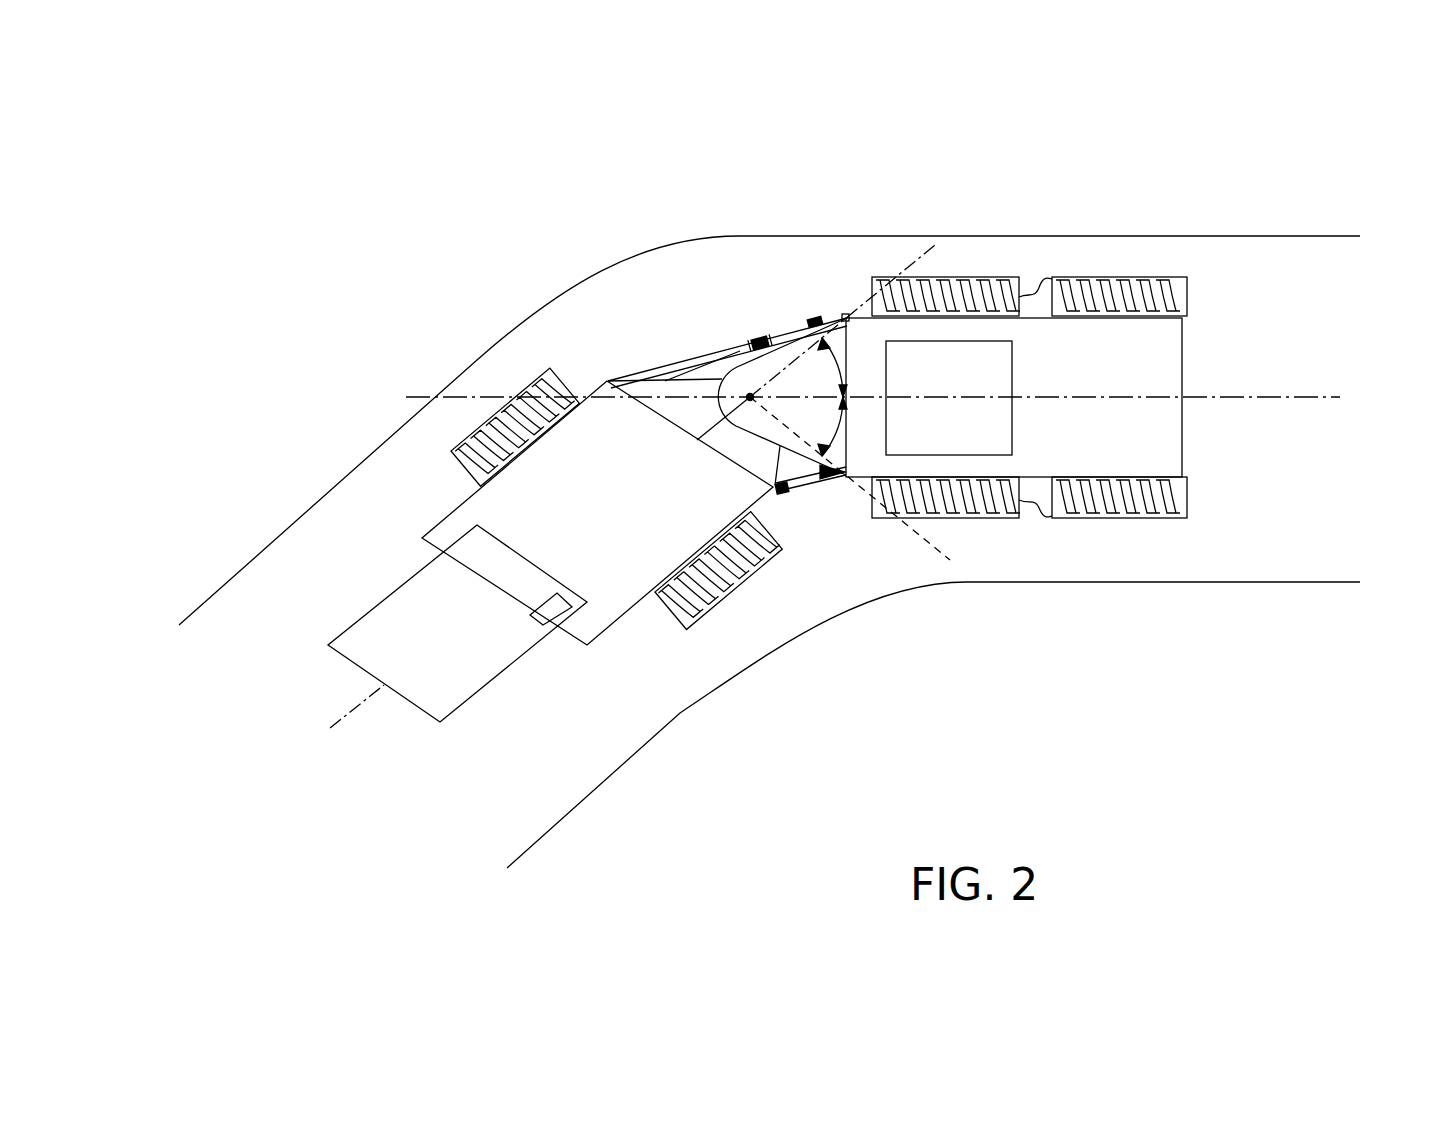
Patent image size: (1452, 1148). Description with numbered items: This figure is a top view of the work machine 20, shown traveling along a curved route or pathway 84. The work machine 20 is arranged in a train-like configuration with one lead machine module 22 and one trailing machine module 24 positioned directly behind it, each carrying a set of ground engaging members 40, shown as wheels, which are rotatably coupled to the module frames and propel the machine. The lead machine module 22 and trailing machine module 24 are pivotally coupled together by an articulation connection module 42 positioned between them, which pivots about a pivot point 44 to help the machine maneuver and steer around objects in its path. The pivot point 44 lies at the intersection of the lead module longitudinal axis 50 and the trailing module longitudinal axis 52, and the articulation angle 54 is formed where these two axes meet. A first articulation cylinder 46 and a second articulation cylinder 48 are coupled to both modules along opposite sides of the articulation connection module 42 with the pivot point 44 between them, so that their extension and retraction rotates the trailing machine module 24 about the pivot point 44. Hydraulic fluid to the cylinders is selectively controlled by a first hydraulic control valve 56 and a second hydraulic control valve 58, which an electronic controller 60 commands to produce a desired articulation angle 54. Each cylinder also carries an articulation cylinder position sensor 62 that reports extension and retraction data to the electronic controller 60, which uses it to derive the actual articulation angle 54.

The work machine 20 is at (401, 155).
The lead machine module 22 is at (385, 625).
The trailing machine module 24 is at (1145, 443).
The ground engaging members 40 is at (1142, 293).
The articulation connection module 42 is at (760, 268).
The pivot point 44 is at (750, 397).
The first articulation cylinder 46 is at (795, 329).
The second articulation cylinder 48 is at (805, 480).
The lead module longitudinal axis 50 is at (343, 718).
The trailing module longitudinal axis 52 is at (475, 397).
The articulation angle 54 is at (828, 350).
The first hydraulic control valve 56 is at (817, 322).
The second hydraulic control valve 58 is at (825, 478).
The electronic controller 60 is at (548, 616).
The articulation cylinder position sensor 62 is at (760, 341).
The pathway 84 is at (1265, 568).